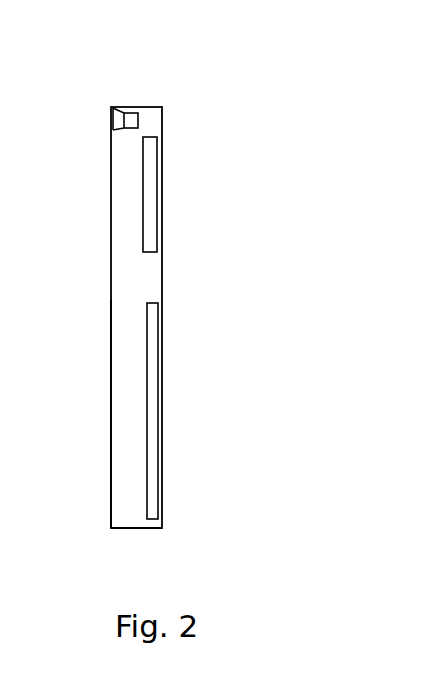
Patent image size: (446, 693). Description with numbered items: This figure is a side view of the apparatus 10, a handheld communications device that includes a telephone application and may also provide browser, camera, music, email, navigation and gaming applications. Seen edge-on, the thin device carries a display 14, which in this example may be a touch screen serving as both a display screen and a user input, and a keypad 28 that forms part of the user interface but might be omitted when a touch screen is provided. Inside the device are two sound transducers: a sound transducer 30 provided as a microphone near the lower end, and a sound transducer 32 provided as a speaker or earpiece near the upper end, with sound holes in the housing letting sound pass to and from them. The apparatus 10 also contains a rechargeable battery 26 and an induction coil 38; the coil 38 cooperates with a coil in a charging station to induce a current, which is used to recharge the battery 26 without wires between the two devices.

The apparatus 10 is at (245, 87).
The display 14 is at (111, 216).
The rechargeable battery 26 is at (160, 420).
The keypad 28 is at (111, 441).
The sound transducer 30 is at (125, 528).
The sound transducer 32 is at (112, 113).
The induction coil 38 is at (162, 211).